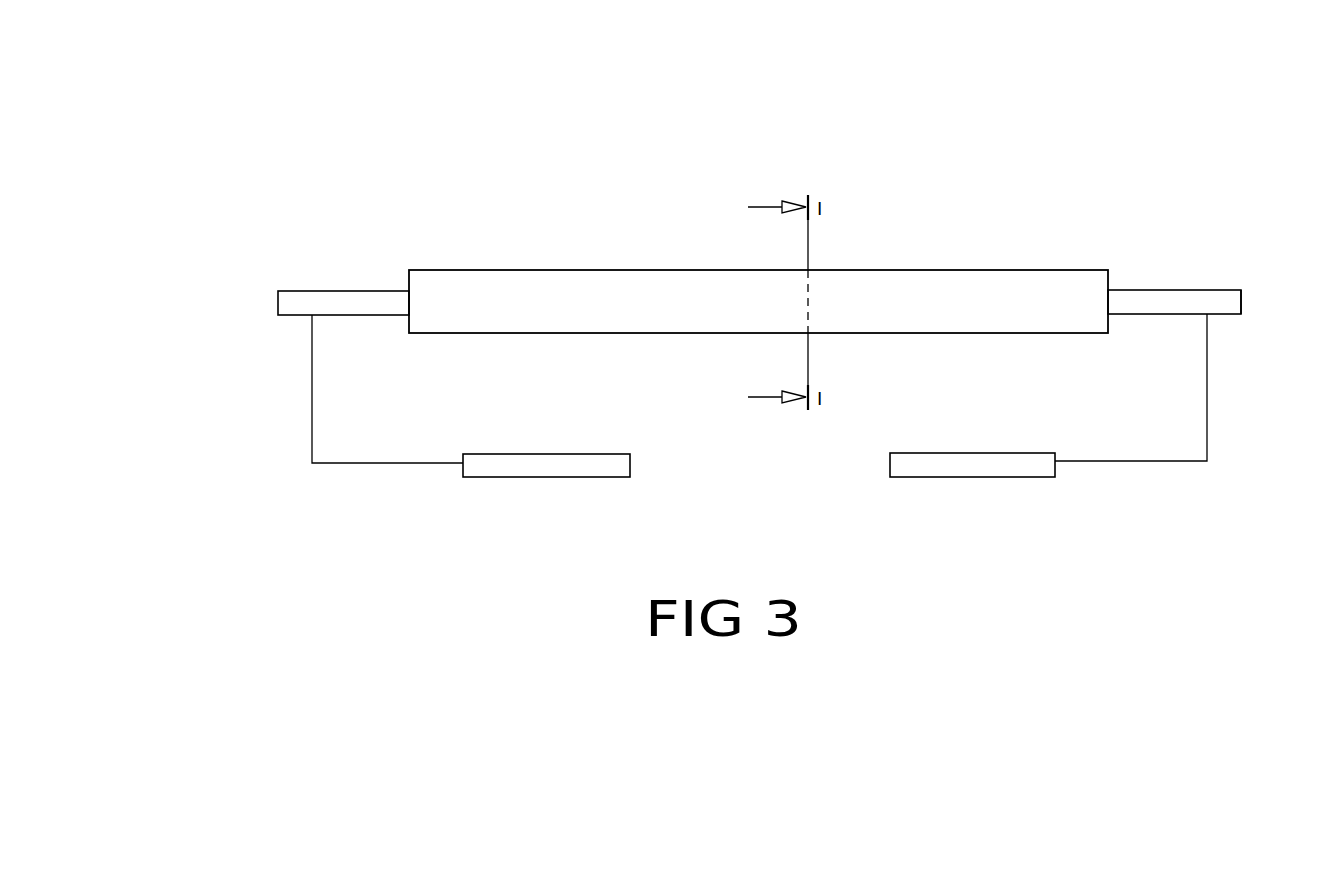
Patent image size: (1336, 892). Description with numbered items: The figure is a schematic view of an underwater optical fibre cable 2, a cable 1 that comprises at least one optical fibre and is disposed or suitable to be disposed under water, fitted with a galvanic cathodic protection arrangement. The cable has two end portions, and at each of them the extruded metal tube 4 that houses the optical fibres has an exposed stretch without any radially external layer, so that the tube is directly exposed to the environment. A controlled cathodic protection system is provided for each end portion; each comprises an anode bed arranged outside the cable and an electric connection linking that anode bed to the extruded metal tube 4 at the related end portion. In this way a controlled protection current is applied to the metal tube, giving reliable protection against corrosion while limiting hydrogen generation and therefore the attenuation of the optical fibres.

The cable 1 is at (932, 230).
The underwater optical fibre cable 2 is at (603, 288).
The extruded metal tube 4 is at (1237, 290).